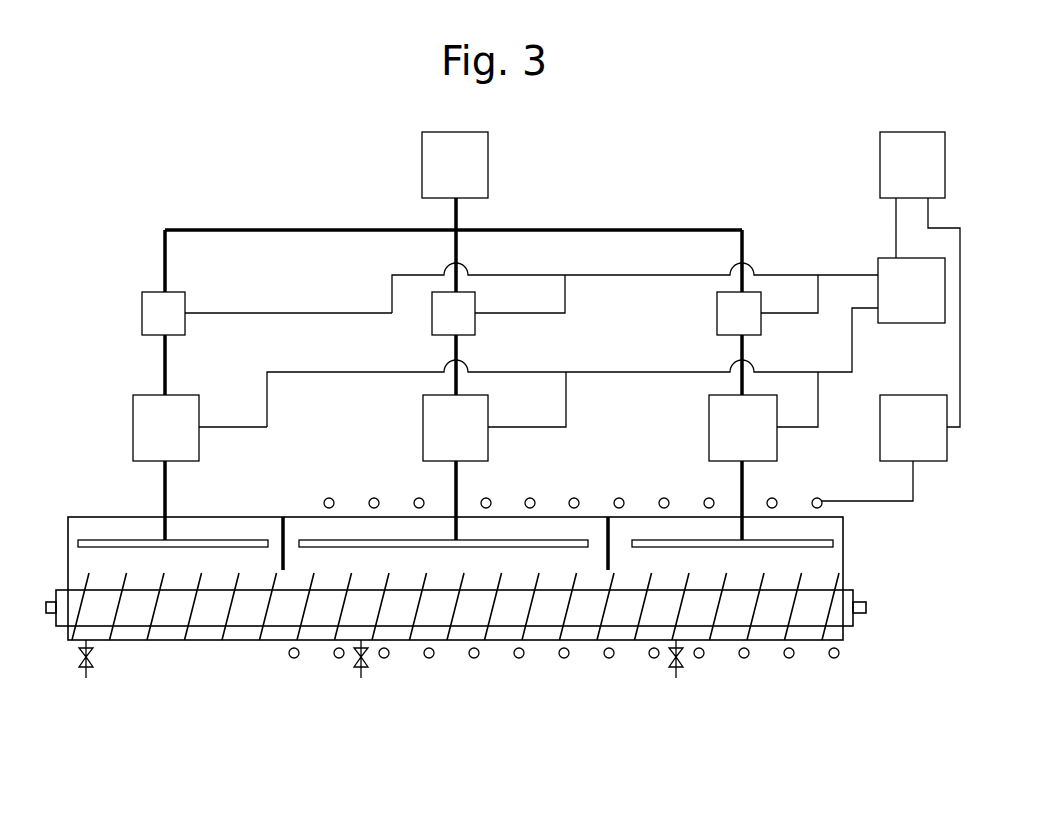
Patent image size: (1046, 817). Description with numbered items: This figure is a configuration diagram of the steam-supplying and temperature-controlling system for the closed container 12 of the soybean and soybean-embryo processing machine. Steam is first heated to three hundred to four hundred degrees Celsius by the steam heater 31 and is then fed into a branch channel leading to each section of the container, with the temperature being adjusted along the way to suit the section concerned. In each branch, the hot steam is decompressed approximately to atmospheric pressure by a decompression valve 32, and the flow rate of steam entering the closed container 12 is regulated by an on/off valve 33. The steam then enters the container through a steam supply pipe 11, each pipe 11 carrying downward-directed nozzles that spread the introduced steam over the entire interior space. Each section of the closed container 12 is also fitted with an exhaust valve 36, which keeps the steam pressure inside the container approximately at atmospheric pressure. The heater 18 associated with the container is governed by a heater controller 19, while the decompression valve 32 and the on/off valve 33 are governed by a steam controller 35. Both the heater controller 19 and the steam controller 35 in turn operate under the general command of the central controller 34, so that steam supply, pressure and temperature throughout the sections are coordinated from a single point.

The steam supply pipe 11 is at (687, 538).
The closed container 12 is at (233, 640).
The heater 18 is at (840, 656).
The heater controller 19 is at (913, 428).
The steam heater 31 is at (455, 165).
The decompression valve 32 is at (451, 313).
The on/off valve 33 is at (455, 428).
The central controller 34 is at (912, 165).
The steam controller 35 is at (911, 290).
The exhaust valve 36 is at (727, 712).